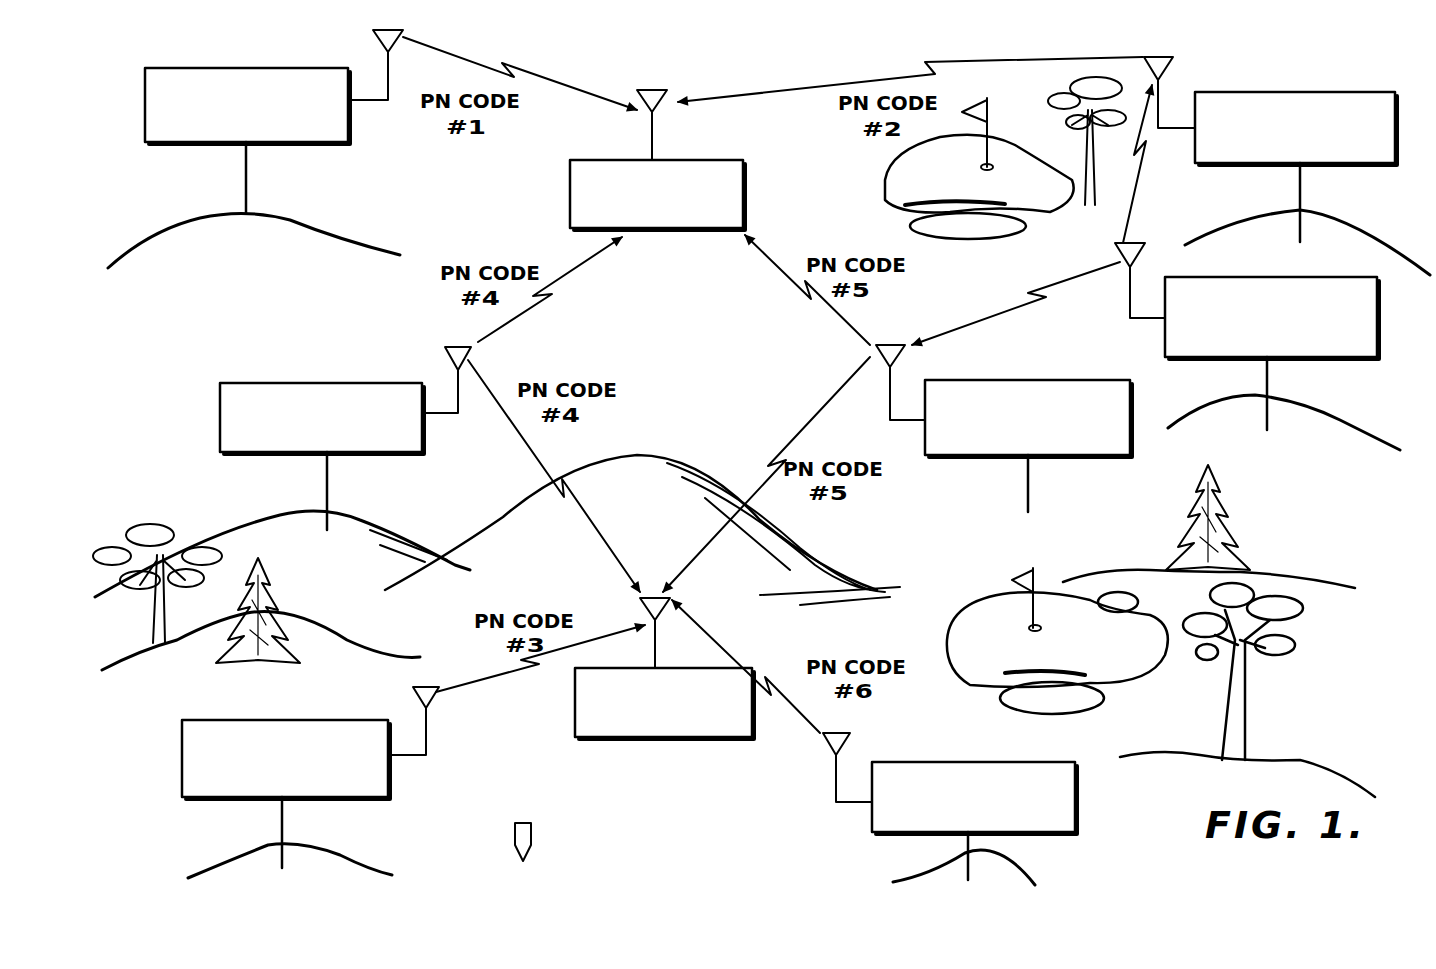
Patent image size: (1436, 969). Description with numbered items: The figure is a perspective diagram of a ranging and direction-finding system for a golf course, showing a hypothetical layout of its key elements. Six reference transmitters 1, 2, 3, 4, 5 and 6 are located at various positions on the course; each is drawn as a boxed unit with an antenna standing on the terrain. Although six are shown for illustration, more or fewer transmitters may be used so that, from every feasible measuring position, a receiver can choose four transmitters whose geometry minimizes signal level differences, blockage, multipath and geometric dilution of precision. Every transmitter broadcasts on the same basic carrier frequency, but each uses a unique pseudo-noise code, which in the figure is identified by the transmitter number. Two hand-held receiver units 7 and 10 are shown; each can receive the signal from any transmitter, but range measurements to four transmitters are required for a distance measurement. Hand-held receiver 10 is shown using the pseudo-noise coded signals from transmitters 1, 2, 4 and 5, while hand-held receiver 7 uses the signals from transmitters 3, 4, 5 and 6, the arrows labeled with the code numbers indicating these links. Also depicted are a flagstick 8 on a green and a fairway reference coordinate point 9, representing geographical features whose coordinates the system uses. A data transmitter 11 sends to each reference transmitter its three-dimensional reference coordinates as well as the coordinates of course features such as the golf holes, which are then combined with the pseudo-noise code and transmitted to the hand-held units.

The reference transmitter 1 is at (293, 143).
The reference transmitter 2 is at (1338, 165).
The reference transmitter 3 is at (320, 797).
The reference transmitter 4 is at (345, 452).
The reference transmitter 5 is at (1040, 455).
The reference transmitter 6 is at (985, 832).
The hand-held receiver unit 7 is at (672, 737).
The flagstick 8 is at (1078, 656).
The fairway reference coordinate point 9 is at (531, 840).
The hand-held receiver unit 10 is at (743, 213).
The data transmitter 11 is at (1290, 357).